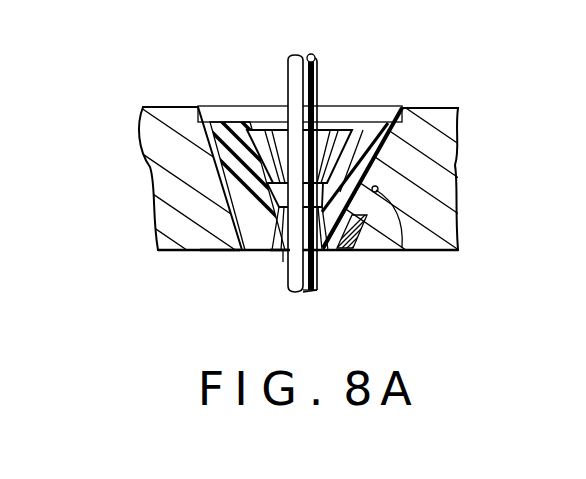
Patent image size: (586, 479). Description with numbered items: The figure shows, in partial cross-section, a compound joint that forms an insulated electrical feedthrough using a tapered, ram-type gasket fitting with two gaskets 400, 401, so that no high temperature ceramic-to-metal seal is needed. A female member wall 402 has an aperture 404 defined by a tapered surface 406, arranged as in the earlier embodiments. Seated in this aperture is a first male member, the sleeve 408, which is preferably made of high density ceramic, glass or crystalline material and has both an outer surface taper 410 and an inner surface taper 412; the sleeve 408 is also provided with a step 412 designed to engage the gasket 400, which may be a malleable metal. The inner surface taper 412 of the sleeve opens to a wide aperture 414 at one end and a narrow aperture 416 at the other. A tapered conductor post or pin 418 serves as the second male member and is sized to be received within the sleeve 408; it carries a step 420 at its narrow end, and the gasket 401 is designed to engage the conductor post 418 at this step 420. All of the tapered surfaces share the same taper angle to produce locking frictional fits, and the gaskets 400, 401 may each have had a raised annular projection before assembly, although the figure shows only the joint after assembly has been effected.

The gasket 400 is at (220, 253).
The gasket 401 is at (315, 272).
The female member wall 402 is at (158, 143).
The aperture 404 is at (221, 98).
The tapered surface 406 is at (398, 107).
The first male member (sleeve) 408 is at (288, 255).
The outer surface taper 410 is at (400, 250).
The inner surface taper 412 is at (381, 107).
The wide aperture 414 is at (264, 106).
The narrow aperture 416 is at (283, 262).
The tapered conductor post or pin 418 is at (317, 58).
The step 420 is at (352, 160).